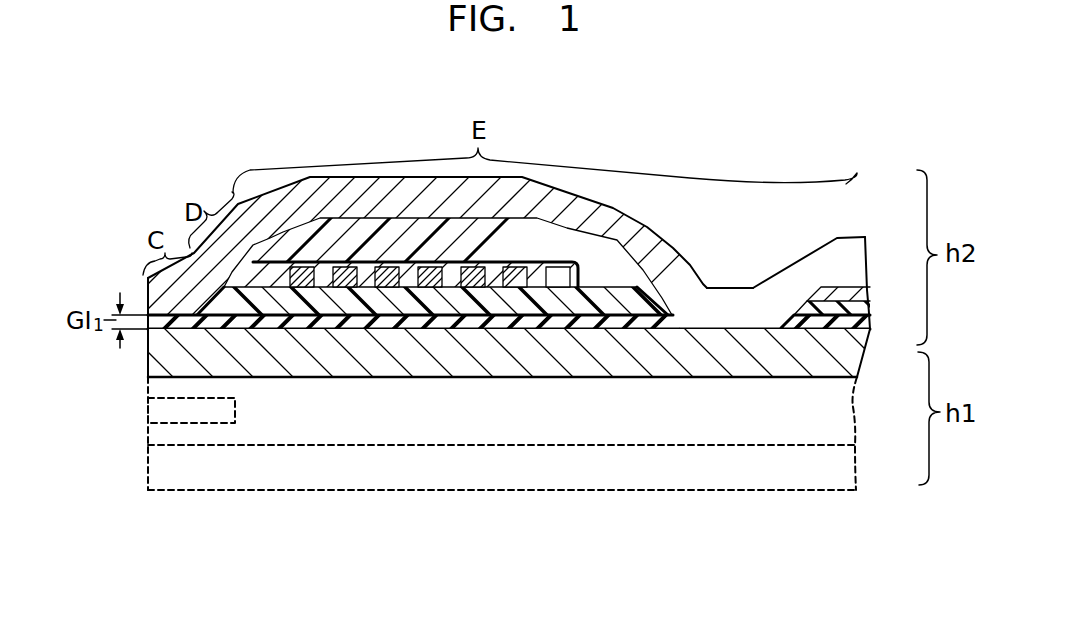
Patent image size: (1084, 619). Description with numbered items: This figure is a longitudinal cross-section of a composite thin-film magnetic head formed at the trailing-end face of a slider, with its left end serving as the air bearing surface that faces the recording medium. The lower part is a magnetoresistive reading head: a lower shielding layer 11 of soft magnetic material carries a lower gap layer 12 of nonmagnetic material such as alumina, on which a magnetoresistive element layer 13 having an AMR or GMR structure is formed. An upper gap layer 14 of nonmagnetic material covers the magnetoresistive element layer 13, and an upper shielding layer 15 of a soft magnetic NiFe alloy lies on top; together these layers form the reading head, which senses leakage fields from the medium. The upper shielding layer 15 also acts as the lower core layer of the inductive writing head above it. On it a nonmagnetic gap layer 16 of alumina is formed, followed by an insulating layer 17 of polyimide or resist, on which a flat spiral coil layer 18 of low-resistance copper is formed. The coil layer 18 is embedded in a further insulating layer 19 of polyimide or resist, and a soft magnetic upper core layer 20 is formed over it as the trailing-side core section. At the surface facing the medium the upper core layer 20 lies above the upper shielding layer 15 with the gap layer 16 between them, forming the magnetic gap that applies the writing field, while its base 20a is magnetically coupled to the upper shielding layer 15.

The lower shielding layer 11 is at (175, 465).
The lower gap layer 12 is at (165, 440).
The magnetoresistive element layer 13 is at (172, 409).
The upper gap layer 14 is at (178, 386).
The upper shielding layer 15 is at (345, 355).
The gap layer 16 is at (513, 322).
The insulating layer 17 is at (623, 297).
The coil layer 18 is at (432, 266).
The insulating layer 19 is at (552, 247).
The upper core layer 20 is at (537, 197).
The base 20a is at (735, 290).